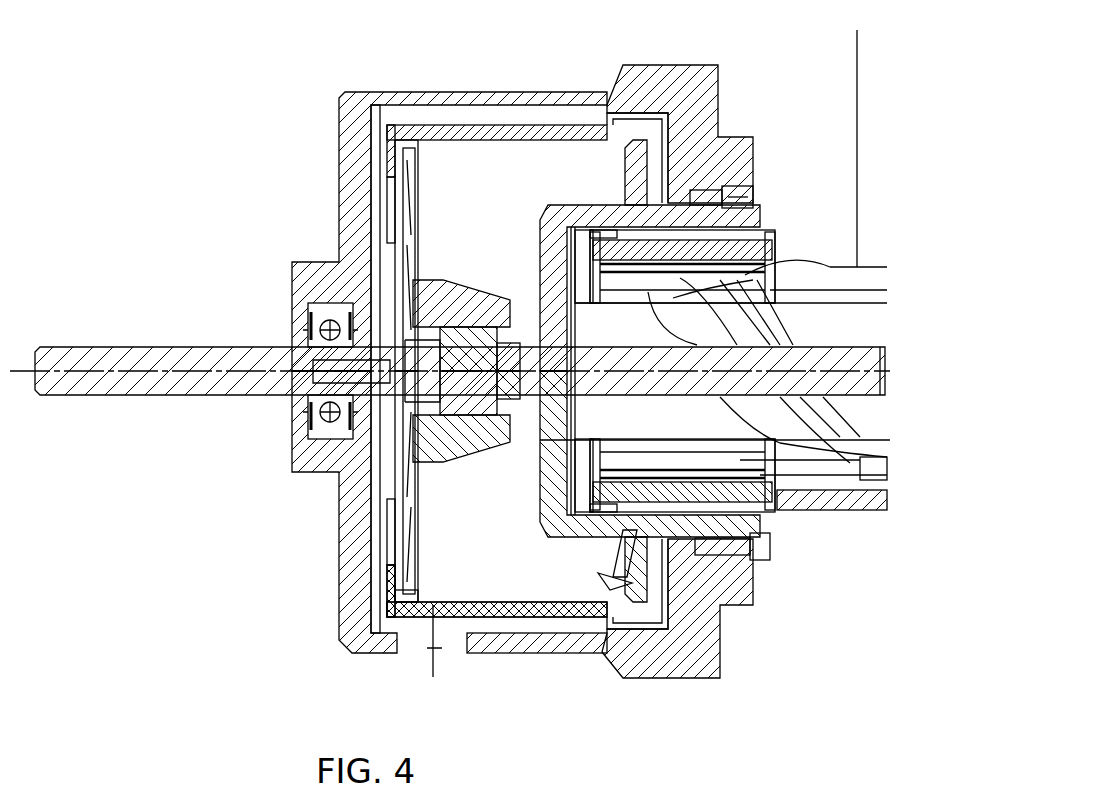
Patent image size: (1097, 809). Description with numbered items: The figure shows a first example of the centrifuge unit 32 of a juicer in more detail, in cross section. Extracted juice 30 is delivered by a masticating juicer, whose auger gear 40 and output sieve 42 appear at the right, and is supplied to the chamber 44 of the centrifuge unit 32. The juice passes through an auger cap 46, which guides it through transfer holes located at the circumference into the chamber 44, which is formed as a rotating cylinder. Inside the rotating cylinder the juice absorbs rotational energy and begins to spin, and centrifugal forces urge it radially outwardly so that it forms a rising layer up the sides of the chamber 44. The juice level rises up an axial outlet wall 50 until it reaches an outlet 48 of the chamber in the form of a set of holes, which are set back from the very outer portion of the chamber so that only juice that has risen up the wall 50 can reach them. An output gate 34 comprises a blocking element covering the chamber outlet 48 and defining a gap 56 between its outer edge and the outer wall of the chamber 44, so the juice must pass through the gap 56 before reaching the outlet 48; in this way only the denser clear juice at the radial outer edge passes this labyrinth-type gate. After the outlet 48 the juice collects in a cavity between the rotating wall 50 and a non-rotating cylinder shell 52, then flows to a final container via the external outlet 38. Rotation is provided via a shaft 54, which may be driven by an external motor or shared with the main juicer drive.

The extracted juice 30 is at (627, 585).
The centrifuge unit 32 is at (450, 371).
The output gate 34 is at (420, 242).
The external outlet 38 is at (433, 650).
The auger gear 40 is at (713, 330).
The output sieve 42 is at (690, 270).
The chamber 44 is at (453, 170).
The auger cap 46 is at (682, 205).
The outlet 48 is at (393, 568).
The axial outlet wall 50 is at (393, 480).
The non-rotating cylinder shell 52 is at (350, 593).
The shaft 54 is at (137, 347).
The gap 56 is at (410, 597).